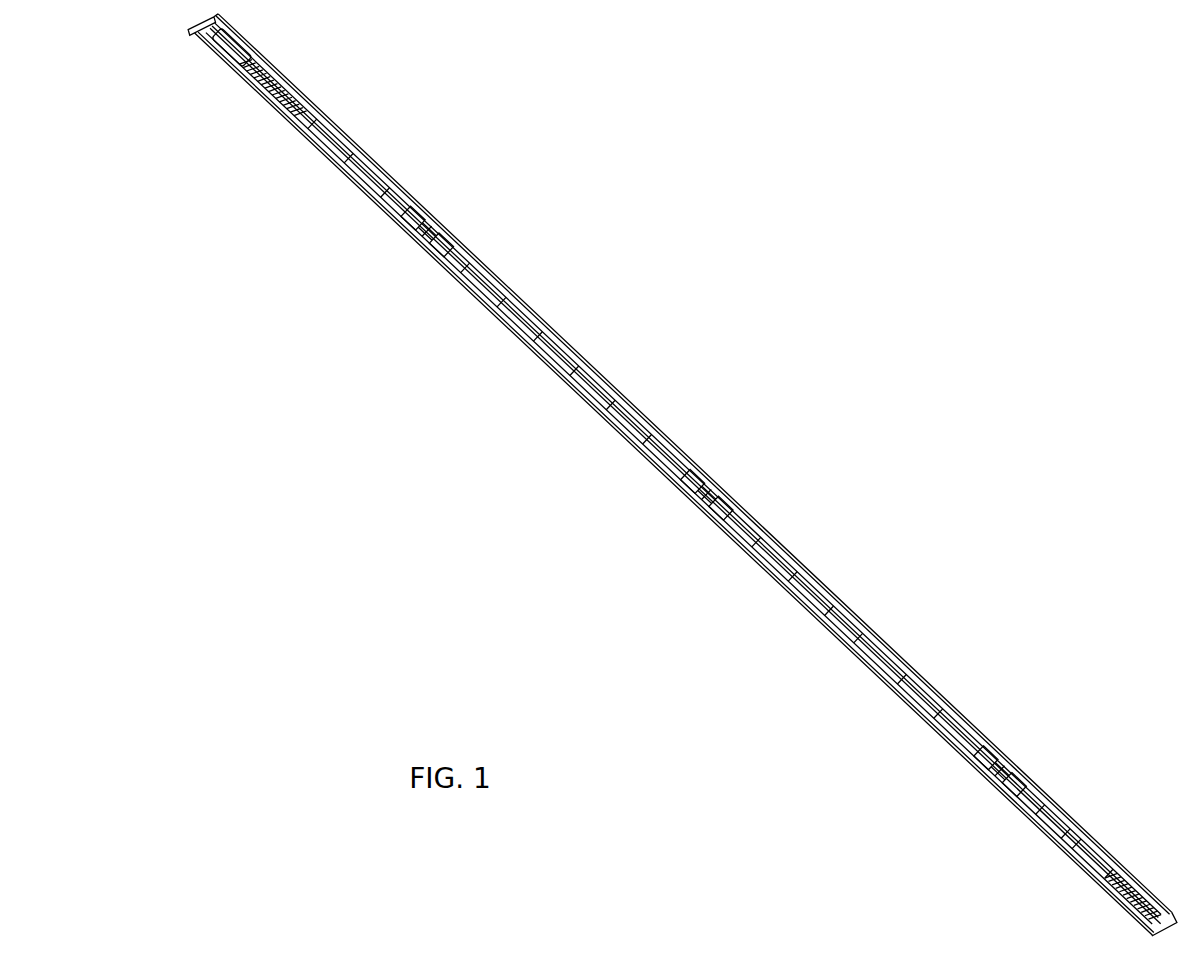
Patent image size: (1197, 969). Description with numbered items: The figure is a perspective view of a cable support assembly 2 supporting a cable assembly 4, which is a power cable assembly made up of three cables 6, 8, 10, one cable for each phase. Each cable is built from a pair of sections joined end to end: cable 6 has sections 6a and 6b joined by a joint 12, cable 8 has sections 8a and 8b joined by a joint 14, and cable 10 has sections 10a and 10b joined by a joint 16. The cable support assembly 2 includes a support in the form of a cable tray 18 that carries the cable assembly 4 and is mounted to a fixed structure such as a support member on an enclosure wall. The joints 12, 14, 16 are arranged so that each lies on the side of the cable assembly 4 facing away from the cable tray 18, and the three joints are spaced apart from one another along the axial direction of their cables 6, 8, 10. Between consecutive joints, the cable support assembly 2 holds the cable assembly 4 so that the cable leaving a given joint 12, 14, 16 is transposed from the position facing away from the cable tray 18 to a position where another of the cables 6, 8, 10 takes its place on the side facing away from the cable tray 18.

The cable support assembly 2 is at (467, 490).
The cable assembly 4 is at (313, 138).
The cable 6 is at (893, 648).
The section 6a is at (1058, 808).
The section 6b is at (948, 700).
The cable 8 is at (757, 522).
The section 8a is at (788, 555).
The section 8b is at (632, 405).
The cable 10 is at (473, 257).
The section 10a is at (510, 287).
The section 10b is at (362, 153).
The joint 12 is at (1010, 760).
The joint 14 is at (717, 483).
The joint 16 is at (425, 218).
The cable tray 18 is at (196, 38).